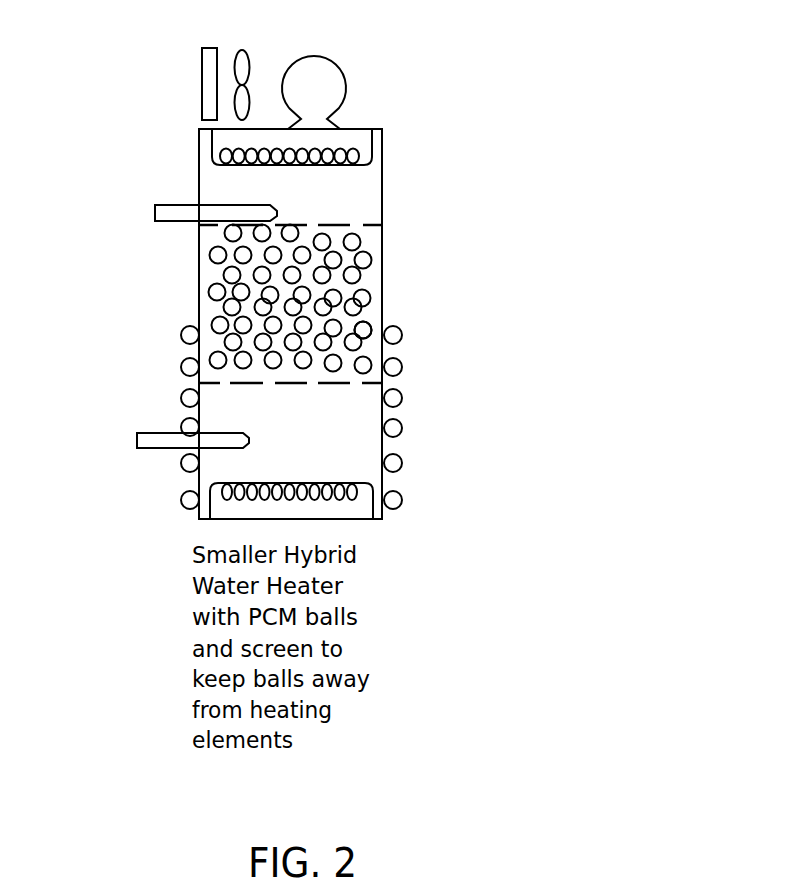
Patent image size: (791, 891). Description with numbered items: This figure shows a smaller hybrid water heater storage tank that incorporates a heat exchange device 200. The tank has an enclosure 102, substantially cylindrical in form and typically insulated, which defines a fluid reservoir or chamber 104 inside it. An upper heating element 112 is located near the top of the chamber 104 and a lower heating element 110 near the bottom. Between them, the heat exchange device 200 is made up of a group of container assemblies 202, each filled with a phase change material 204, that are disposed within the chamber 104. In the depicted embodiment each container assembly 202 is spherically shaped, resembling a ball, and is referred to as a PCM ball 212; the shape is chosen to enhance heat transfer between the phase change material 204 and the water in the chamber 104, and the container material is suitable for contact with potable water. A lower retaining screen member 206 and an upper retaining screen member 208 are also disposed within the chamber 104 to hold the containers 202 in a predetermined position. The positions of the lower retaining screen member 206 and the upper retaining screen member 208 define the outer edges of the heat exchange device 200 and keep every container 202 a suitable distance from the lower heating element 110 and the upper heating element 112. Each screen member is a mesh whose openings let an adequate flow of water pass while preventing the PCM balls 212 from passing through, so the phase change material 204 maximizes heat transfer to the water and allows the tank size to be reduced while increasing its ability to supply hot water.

The enclosure 102 is at (377, 145).
The chamber 104 is at (358, 183).
The upper heating element 112 is at (343, 148).
The lower heating element 110 is at (320, 500).
The upper retaining screen member 208 is at (342, 225).
The lower retaining screen member 206 is at (345, 383).
The heat exchange device 200 is at (208, 247).
The PCM ball 212 is at (208, 293).
The container assembly 202 is at (373, 283).
The phase change material 204 is at (360, 313).